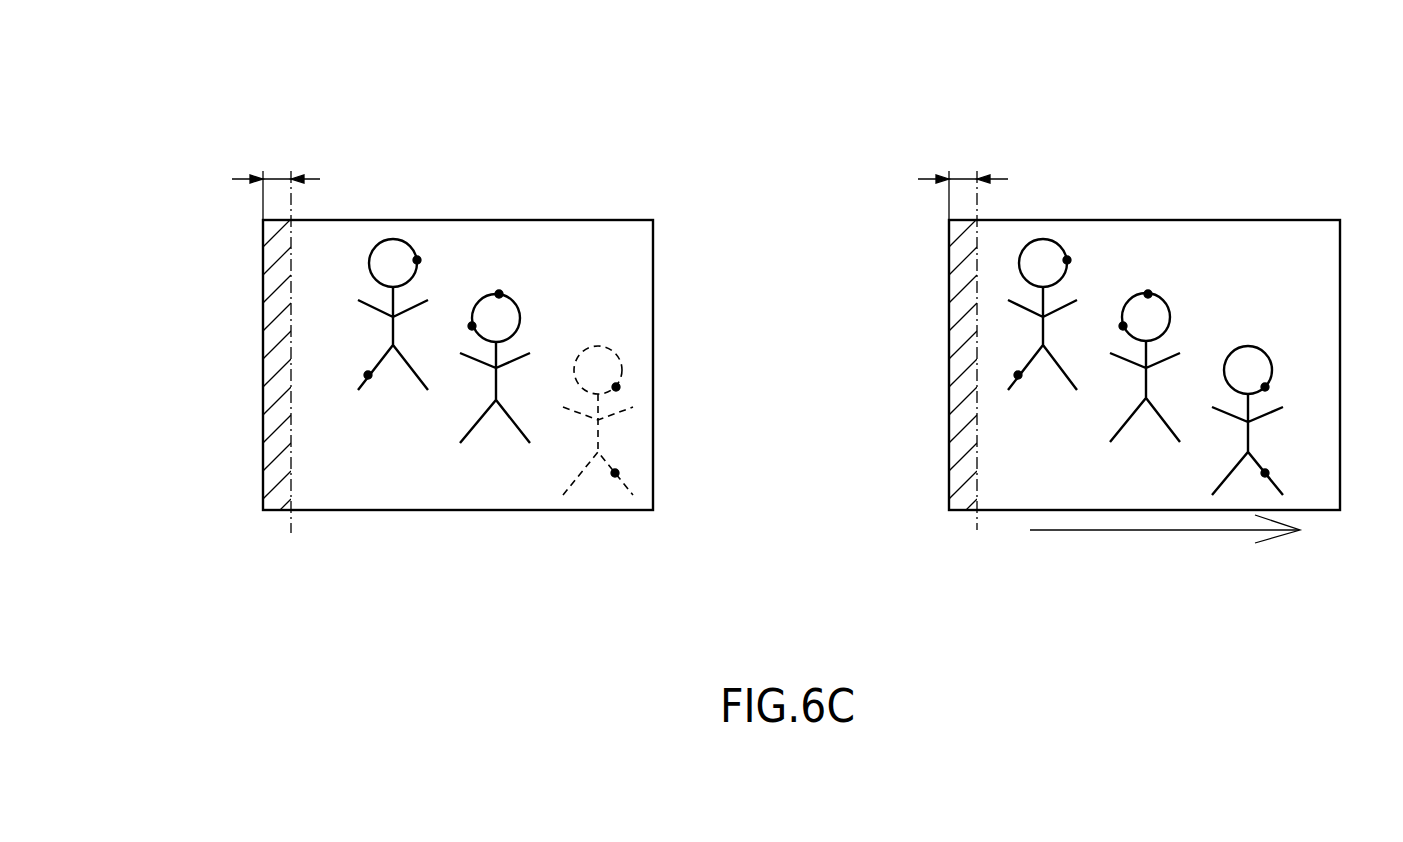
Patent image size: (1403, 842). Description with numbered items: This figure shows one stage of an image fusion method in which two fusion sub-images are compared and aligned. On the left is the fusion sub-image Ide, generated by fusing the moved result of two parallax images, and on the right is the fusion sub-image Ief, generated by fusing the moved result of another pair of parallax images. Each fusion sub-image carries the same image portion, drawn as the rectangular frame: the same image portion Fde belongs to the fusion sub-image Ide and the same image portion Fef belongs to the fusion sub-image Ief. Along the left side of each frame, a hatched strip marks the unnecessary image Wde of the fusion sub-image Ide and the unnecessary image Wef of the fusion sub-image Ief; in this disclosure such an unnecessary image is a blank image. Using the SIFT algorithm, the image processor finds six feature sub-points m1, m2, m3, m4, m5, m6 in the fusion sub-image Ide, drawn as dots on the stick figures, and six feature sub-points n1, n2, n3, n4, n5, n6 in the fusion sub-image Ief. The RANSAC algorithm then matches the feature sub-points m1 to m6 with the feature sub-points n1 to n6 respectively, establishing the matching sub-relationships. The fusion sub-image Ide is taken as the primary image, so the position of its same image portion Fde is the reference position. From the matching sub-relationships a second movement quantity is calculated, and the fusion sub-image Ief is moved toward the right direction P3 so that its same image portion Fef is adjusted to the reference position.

The same image portion Fde is at (513, 212).
The same image portion Fef is at (1163, 212).
The fusion sub-image Ide is at (263, 415).
The fusion sub-image Ief is at (949, 319).
The unnecessary image Wde is at (277, 178).
The unnecessary image Wef is at (964, 178).
The feature sub-point m1 is at (417, 260).
The feature sub-point m2 is at (368, 375).
The feature sub-point m3 is at (499, 294).
The feature sub-point m4 is at (472, 326).
The feature sub-point m5 is at (616, 387).
The feature sub-point m6 is at (615, 473).
The feature sub-point n1 is at (1067, 260).
The feature sub-point n2 is at (1018, 375).
The feature sub-point n3 is at (1148, 294).
The feature sub-point n4 is at (1123, 326).
The feature sub-point n5 is at (1265, 387).
The feature sub-point n6 is at (1265, 473).
The right direction P3 is at (1165, 542).